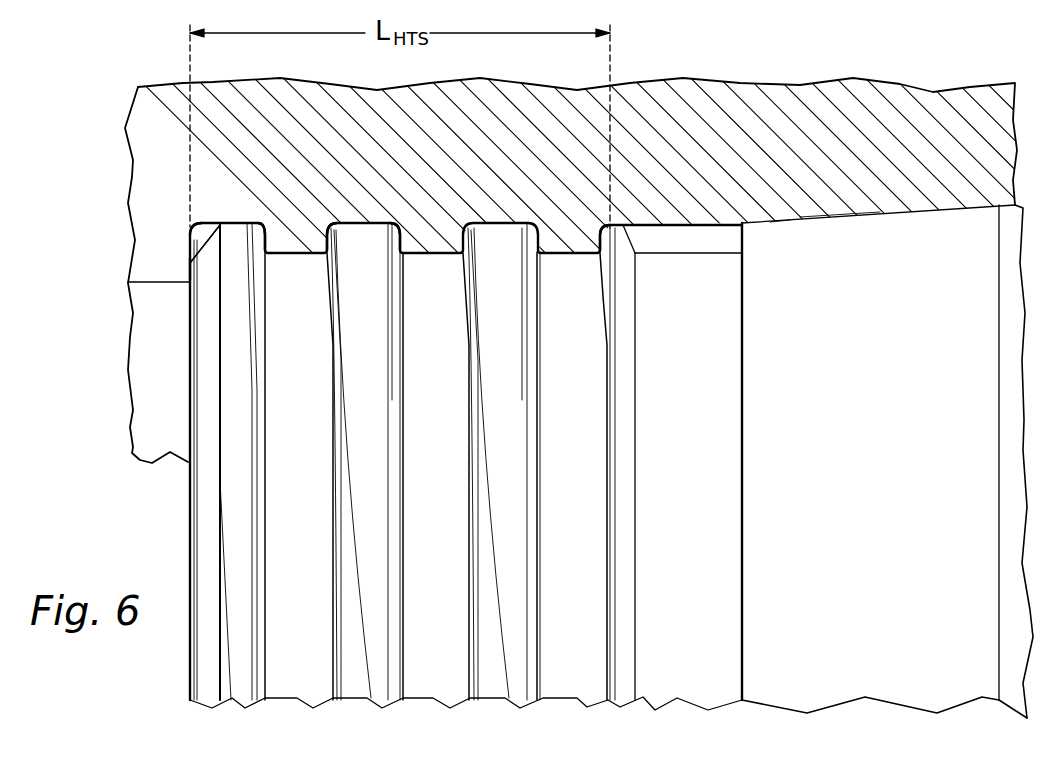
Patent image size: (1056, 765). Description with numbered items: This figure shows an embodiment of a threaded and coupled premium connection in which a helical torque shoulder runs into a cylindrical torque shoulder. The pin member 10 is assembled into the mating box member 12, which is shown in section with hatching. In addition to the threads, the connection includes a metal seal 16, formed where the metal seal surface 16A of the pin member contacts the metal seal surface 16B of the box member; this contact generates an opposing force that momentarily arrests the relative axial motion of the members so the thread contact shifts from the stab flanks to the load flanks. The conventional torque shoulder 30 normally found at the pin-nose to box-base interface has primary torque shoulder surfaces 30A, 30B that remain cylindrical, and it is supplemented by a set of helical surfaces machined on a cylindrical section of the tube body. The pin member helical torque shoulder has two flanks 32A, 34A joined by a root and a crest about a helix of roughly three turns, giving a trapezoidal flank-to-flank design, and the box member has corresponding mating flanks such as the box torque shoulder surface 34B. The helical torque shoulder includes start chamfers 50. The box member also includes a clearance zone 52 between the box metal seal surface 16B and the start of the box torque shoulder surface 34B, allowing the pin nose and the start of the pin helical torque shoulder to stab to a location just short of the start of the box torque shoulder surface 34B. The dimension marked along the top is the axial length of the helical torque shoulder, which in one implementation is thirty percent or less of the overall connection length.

The pin member 10 is at (934, 330).
The box member 12 is at (703, 103).
The metal seal 16 is at (822, 231).
The metal seal surface of the first member 16A is at (800, 216).
The metal seal surface of the second member 16B is at (782, 222).
The conventional torque shoulder 30 is at (221, 282).
The primary torque shoulder surface 30A is at (190, 268).
The primary torque shoulder surface 30B is at (193, 263).
The helical torque shoulder flank 32A is at (278, 238).
The helical torque shoulder flank 34A is at (345, 240).
The box torque shoulder surface 34B is at (325, 242).
The start chamfer 50 is at (190, 243).
The clearance zone 52 is at (684, 246).